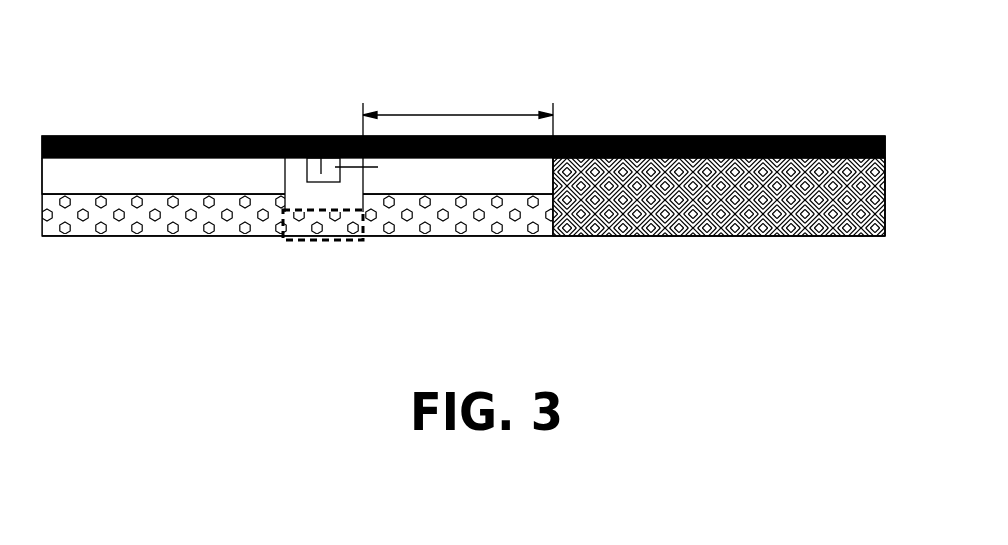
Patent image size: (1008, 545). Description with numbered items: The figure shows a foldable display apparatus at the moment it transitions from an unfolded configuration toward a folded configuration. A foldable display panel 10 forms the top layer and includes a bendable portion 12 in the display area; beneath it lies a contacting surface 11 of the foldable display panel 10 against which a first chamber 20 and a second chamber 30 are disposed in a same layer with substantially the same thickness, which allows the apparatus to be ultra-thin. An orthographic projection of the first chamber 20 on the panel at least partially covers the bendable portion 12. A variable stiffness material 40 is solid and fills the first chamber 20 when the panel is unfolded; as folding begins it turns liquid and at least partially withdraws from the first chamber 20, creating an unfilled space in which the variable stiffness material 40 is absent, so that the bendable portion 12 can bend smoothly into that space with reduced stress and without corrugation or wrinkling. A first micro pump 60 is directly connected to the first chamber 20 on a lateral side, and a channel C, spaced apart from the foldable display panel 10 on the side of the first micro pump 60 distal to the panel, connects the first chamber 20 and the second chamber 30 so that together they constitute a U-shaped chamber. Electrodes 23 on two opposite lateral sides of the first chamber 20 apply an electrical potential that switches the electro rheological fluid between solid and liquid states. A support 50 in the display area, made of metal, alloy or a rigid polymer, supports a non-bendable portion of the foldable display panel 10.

The foldable display panel 10 is at (600, 137).
The contacting surface 11 is at (652, 160).
The bendable portion 12 is at (458, 107).
The first chamber 20 is at (452, 175).
The electrodes 23 is at (415, 302).
The second chamber 30 is at (241, 178).
The variable stiffness material 40 is at (480, 212).
The support 50 is at (778, 212).
The first micro pump 60 is at (322, 136).
The channel C is at (327, 240).